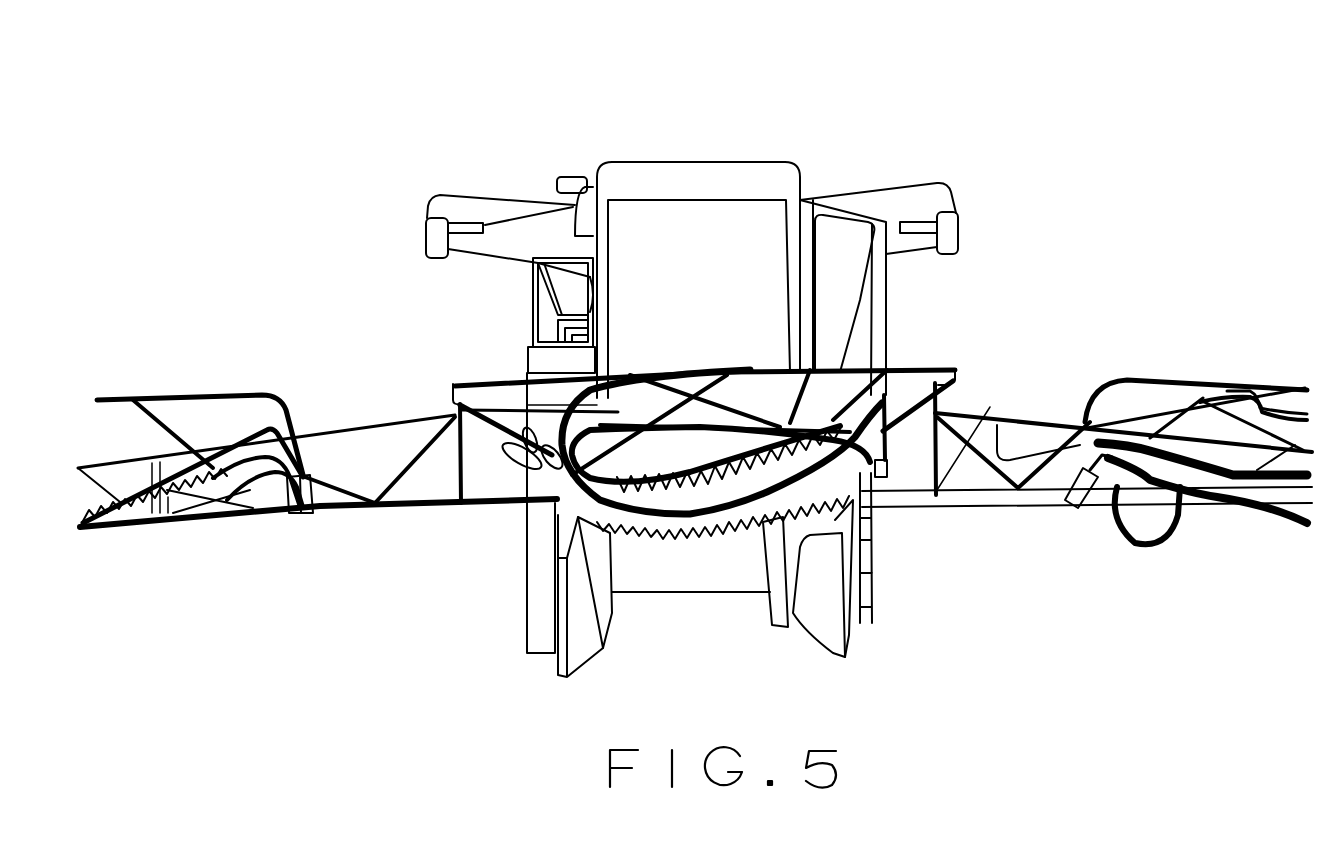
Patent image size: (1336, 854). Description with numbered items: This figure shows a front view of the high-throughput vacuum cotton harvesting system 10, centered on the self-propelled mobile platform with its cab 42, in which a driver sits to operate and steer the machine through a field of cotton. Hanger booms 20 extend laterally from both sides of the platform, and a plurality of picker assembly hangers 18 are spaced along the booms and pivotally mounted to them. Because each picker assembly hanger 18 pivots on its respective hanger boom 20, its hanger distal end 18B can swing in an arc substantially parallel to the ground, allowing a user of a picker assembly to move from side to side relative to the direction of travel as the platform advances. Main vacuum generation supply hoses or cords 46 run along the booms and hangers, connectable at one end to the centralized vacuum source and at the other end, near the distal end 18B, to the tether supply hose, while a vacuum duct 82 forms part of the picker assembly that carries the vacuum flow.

The system 10 is at (857, 147).
The cab 42 is at (678, 218).
The picker assembly hanger 18 is at (200, 395).
The hanger distal end 18B is at (466, 385).
The hanger boom 20 is at (357, 510).
The main vacuum generation supply hose or cord 46 is at (185, 490).
The vacuum duct 82 is at (145, 505).